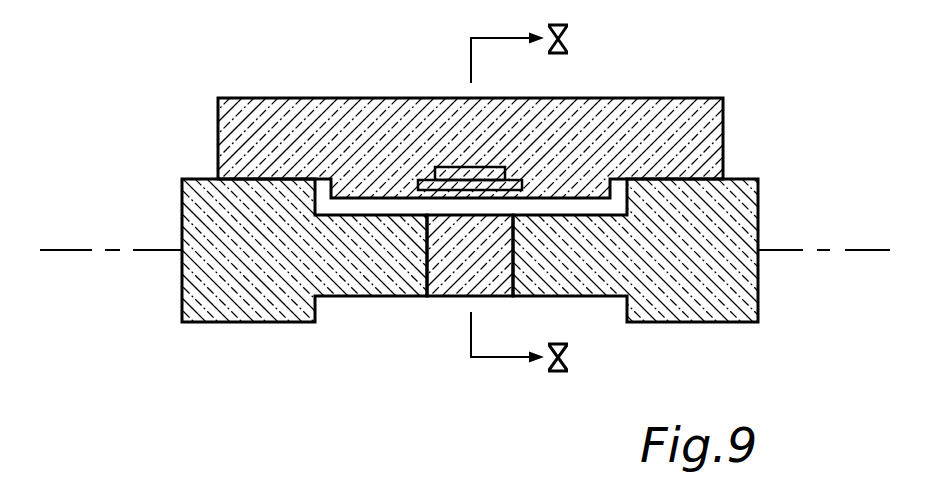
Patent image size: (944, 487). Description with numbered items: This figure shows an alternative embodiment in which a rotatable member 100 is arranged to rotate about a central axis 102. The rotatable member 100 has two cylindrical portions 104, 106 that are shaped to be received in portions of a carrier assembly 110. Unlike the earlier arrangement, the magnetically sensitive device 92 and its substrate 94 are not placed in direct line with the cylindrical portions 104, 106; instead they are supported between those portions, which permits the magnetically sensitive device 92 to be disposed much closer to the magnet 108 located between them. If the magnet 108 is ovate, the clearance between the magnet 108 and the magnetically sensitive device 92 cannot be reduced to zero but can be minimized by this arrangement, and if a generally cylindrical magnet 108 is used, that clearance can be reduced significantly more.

The magnetically sensitive device 92 is at (450, 167).
The substrate 94 is at (516, 180).
The rotatable member 100 is at (468, 285).
The central axis 102 is at (828, 251).
The cylindrical portion 104 is at (278, 303).
The cylindrical portion 106 is at (688, 305).
The magnet 108 is at (445, 287).
The carrier assembly 110 is at (715, 127).